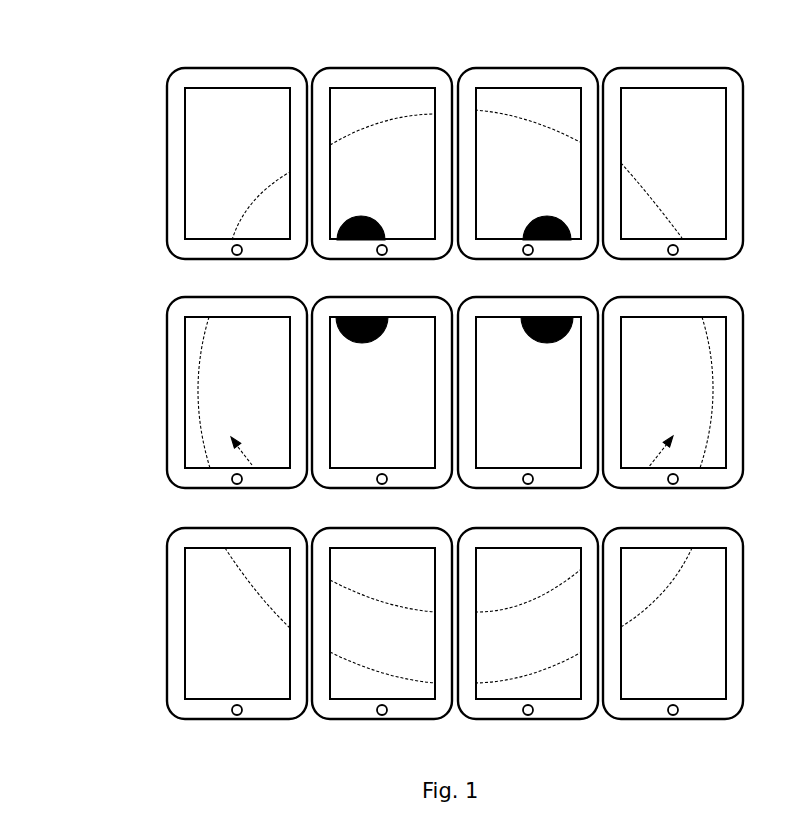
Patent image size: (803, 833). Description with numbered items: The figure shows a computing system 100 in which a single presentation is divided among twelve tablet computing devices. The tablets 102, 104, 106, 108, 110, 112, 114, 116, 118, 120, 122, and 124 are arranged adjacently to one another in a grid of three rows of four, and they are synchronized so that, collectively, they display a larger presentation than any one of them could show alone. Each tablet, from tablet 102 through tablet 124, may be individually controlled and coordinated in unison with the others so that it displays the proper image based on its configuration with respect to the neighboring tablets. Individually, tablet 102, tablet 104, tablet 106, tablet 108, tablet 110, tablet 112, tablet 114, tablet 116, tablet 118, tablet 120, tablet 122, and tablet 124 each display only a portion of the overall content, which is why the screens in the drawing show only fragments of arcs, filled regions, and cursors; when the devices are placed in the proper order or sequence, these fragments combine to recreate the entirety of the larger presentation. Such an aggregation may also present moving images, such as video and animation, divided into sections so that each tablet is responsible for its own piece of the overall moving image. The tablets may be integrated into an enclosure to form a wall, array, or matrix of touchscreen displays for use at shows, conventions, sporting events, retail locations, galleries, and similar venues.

The computing system 100 is at (73, 37).
The tablet 102 is at (208, 63).
The tablet 104 is at (353, 63).
The tablet 106 is at (500, 63).
The tablet 108 is at (647, 63).
The tablet 110 is at (208, 292).
The tablet 112 is at (353, 292).
The tablet 114 is at (500, 292).
The tablet 116 is at (647, 292).
The tablet 118 is at (208, 523).
The tablet 120 is at (353, 523).
The tablet 122 is at (500, 523).
The tablet 124 is at (647, 523).